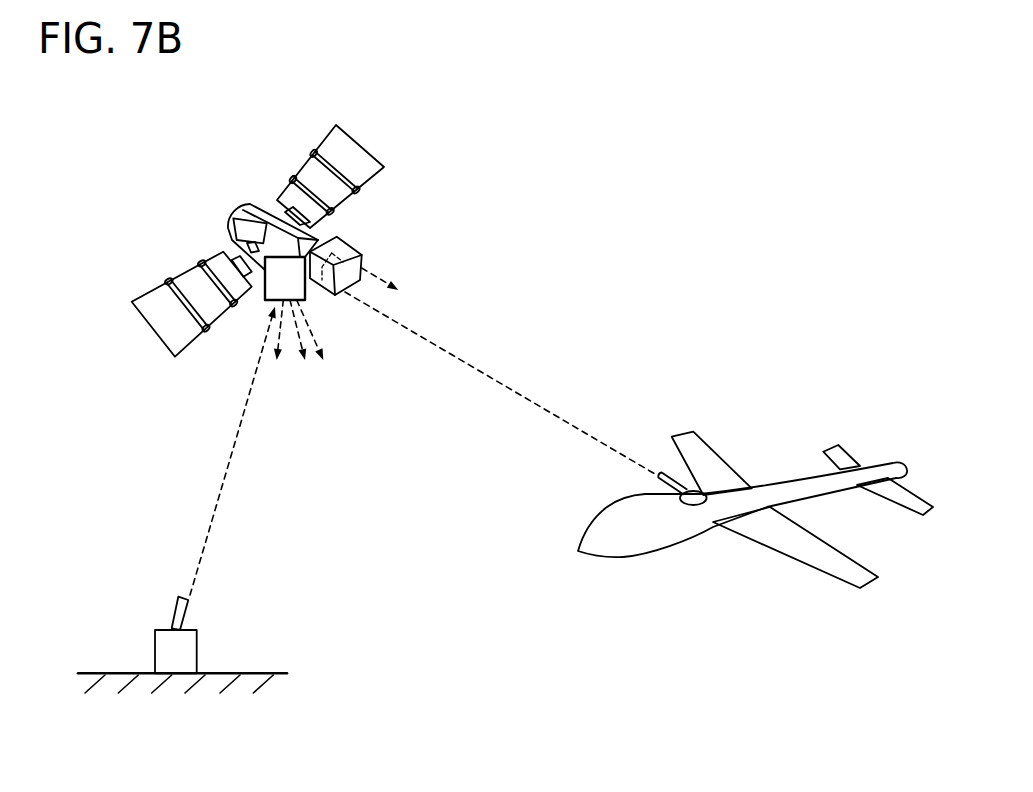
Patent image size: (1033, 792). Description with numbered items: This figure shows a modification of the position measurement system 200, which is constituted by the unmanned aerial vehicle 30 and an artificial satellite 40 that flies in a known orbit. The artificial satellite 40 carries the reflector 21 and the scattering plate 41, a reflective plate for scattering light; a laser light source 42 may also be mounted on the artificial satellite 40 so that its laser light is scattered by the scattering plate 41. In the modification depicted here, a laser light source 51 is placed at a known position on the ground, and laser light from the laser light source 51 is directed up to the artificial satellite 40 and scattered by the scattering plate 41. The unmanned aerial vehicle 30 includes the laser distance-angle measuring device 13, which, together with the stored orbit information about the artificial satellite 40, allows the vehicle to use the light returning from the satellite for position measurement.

The position measurement system 200 is at (542, 104).
The artificial satellite 40 is at (223, 179).
The laser light source 42 is at (227, 230).
The scattering plate 41 is at (306, 300).
The reflector 21 is at (350, 245).
The unmanned aerial vehicle 30 is at (799, 405).
The laser distance-angle measuring device 13 is at (667, 473).
The laser light source 51 is at (155, 630).